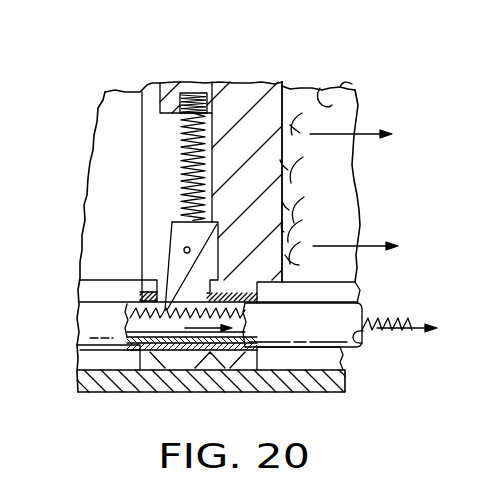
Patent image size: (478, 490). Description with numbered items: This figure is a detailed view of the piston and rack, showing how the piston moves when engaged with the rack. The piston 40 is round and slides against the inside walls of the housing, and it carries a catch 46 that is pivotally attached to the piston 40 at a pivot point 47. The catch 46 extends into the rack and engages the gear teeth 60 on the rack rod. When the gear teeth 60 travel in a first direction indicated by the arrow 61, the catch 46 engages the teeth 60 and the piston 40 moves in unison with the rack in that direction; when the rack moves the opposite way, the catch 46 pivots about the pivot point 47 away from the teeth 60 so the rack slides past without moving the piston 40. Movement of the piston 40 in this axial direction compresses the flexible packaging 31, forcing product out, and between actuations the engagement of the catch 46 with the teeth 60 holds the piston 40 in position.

The piston 40 is at (247, 86).
The flexible packaging 31 is at (323, 93).
The catch 46 is at (176, 265).
The pivot point 47 is at (184, 247).
The teeth 60 is at (153, 372).
The arrow 61 is at (364, 132).